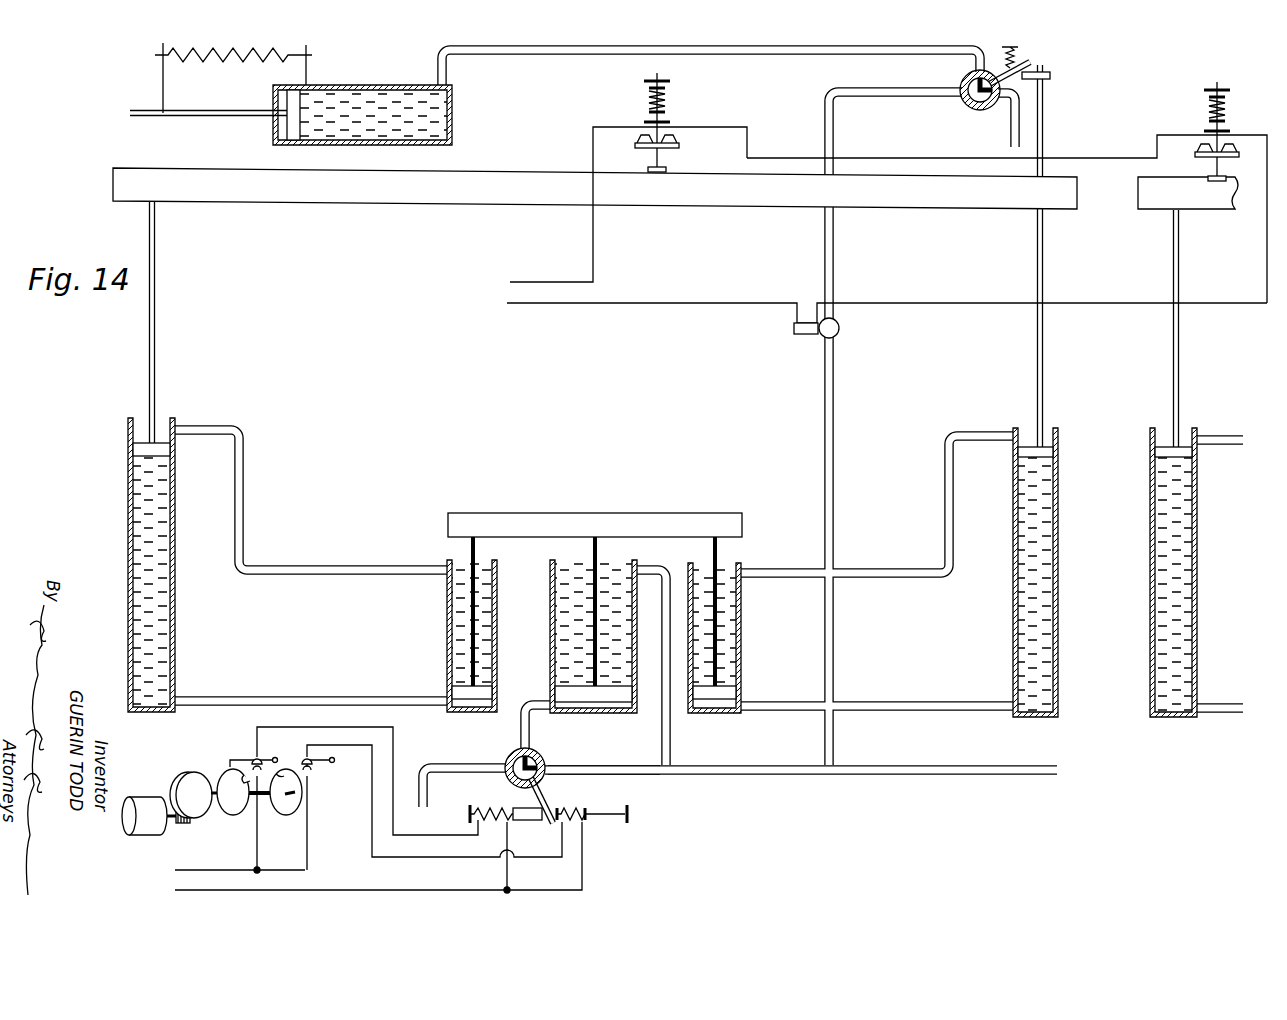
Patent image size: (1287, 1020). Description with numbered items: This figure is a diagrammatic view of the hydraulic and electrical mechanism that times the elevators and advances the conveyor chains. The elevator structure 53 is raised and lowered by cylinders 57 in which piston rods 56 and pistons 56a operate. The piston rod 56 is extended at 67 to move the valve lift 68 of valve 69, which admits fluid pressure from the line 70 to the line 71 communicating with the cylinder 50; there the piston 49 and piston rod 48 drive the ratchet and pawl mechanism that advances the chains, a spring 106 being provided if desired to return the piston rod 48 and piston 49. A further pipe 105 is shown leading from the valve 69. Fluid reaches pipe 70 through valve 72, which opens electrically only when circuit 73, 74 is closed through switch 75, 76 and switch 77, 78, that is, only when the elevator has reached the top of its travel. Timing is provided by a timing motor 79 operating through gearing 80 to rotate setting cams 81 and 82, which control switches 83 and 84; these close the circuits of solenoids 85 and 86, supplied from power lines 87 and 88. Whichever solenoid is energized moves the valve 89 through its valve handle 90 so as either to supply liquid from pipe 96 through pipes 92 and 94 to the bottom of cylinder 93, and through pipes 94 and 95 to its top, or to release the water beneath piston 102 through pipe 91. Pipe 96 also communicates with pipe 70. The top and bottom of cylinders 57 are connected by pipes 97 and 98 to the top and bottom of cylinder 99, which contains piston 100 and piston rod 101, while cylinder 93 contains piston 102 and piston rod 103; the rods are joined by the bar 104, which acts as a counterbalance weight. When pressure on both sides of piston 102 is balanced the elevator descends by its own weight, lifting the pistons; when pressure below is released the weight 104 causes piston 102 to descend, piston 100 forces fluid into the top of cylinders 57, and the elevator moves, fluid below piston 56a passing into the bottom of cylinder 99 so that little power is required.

The piston rod 48 is at (200, 114).
The piston 49 is at (296, 98).
The cylinder 50 is at (396, 84).
The elevator structure 53 is at (942, 194).
The piston rod 56 is at (157, 348).
The piston 56a is at (132, 442).
The cylinder 57 is at (128, 512).
The extension of piston rod 67 is at (1050, 78).
The valve lift 68 is at (1032, 60).
The valve 69 is at (970, 106).
The line 70 is at (838, 128).
The line 71 is at (792, 56).
The valve 72 is at (840, 332).
The circuit 73 is at (720, 308).
The circuit 74 is at (967, 304).
The switch 75 is at (1222, 144).
The switch 76 is at (1106, 158).
The switch 77 is at (672, 128).
The switch 78 is at (588, 125).
The timing motor 79 is at (138, 798).
The gearing 80 is at (188, 772).
The setting cam 81 is at (230, 816).
The setting cam 82 is at (288, 816).
The switch 83 is at (242, 759).
The switch 84 is at (320, 764).
The solenoid 85 is at (494, 798).
The solenoid 86 is at (584, 799).
The power line 87 is at (182, 870).
The power line 88 is at (176, 890).
The valve 89 is at (536, 754).
The valve handle 90 is at (542, 798).
The pipe 91 is at (458, 764).
The pipe 92 is at (528, 730).
The cylinder 93 is at (550, 634).
The pipe 94 is at (620, 768).
The pipe 95 is at (670, 744).
The pipe 96 is at (775, 768).
The pipe 97 is at (292, 566).
The pipe 98 is at (278, 694).
The cylinder 99 is at (448, 606).
The piston 100 is at (466, 690).
The piston rod 101 is at (470, 637).
The piston 102 is at (566, 688).
The piston rod 103 is at (598, 550).
The bar 104 is at (632, 508).
The pipe 105 is at (1025, 125).
The spring 106 is at (236, 78).